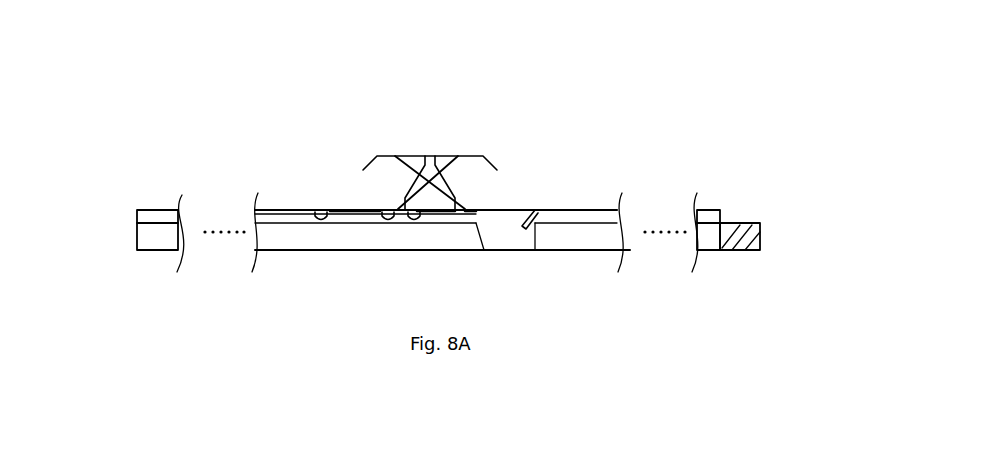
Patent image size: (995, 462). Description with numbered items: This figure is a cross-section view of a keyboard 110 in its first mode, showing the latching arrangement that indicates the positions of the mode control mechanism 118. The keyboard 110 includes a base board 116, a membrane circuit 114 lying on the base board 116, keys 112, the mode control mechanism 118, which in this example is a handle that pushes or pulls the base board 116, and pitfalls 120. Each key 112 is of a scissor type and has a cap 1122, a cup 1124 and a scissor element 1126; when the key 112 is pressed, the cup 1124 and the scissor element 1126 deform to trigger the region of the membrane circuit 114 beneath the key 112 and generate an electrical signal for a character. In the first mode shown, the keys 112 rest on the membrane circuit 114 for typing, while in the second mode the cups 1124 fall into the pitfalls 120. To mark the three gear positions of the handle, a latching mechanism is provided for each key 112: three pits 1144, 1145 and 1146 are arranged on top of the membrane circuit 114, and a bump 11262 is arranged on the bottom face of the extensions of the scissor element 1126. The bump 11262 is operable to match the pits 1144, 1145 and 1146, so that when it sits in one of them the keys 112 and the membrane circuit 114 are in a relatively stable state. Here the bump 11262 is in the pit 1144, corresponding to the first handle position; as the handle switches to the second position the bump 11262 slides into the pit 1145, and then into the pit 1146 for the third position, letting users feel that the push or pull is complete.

The keyboard 110 is at (176, 58).
The key 112 is at (510, 133).
The cap 1122 is at (368, 166).
The cup 1124 is at (424, 158).
The scissor element 1126 is at (442, 162).
The bump 11262 is at (327, 212).
The membrane circuit 114 is at (158, 218).
The base board 116 is at (148, 250).
The mode control mechanism 118 is at (740, 233).
The pitfall 120 is at (510, 222).
The pit 1144 is at (320, 218).
The pit 1145 is at (388, 222).
The pit 1146 is at (418, 220).